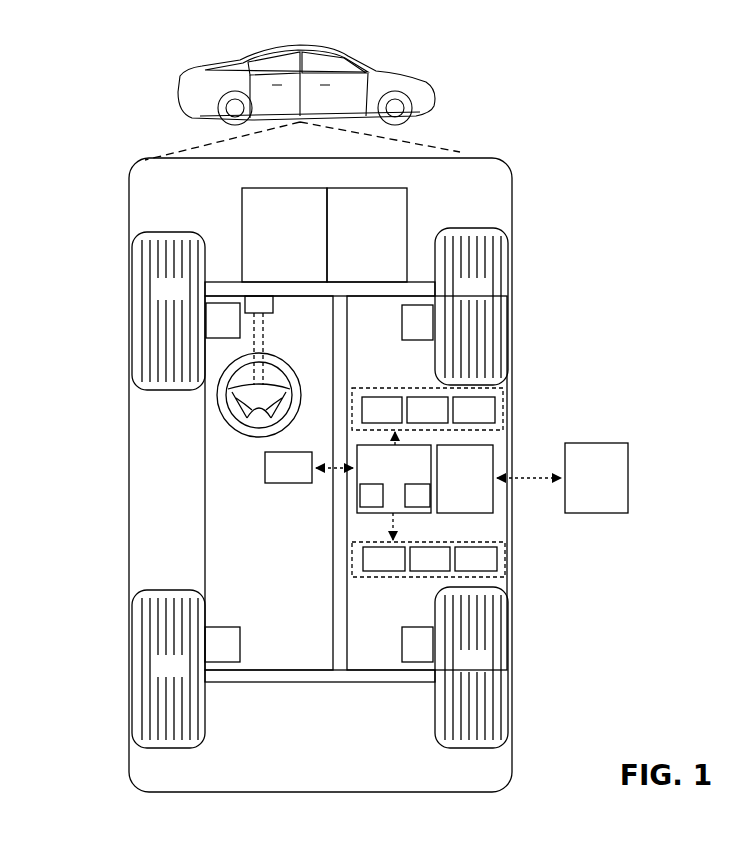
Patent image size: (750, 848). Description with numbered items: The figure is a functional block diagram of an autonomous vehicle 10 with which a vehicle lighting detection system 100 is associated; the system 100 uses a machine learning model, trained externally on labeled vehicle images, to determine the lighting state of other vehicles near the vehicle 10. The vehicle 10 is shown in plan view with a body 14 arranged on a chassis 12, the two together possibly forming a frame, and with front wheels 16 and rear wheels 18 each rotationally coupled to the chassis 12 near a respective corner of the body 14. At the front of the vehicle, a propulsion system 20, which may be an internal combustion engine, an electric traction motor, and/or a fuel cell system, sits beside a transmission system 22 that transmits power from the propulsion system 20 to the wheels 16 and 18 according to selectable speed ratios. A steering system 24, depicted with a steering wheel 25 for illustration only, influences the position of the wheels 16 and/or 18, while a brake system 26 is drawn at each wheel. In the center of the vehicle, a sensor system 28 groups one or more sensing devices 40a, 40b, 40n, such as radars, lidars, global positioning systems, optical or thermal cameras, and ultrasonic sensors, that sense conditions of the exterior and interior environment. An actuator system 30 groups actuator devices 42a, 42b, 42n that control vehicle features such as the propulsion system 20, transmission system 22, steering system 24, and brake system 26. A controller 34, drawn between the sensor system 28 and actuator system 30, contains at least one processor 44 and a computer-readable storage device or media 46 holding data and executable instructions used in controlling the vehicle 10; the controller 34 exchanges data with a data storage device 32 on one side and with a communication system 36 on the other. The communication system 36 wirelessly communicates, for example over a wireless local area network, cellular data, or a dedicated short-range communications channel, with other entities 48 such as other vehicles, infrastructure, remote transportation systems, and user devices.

The autonomous vehicle 10 is at (190, 82).
The chassis 12 is at (340, 683).
The body 14 is at (129, 448).
The front wheels 16 is at (160, 298).
The rear wheels 18 is at (160, 675).
The propulsion system 20 is at (275, 243).
The transmission system 22 is at (358, 243).
The steering system 24 is at (238, 446).
The steering wheel 25 is at (287, 362).
The brake system 26 is at (215, 328).
The sensor system 28 is at (427, 391).
The actuator system 30 is at (428, 579).
The data storage device 32 is at (279, 475).
The controller 34 is at (386, 476).
The communication system 36 is at (456, 486).
The sensing device 40a is at (370, 418).
The sensing device 40b is at (415, 418).
The sensing device 40n is at (462, 418).
The actuator device 42a is at (372, 567).
The actuator device 42b is at (418, 567).
The actuator device 42n is at (464, 567).
The processor 44 is at (363, 503).
The computer-readable storage device or media 46 is at (409, 503).
The other entities 48 is at (587, 485).
The vehicle lighting detection system 100 is at (336, 475).